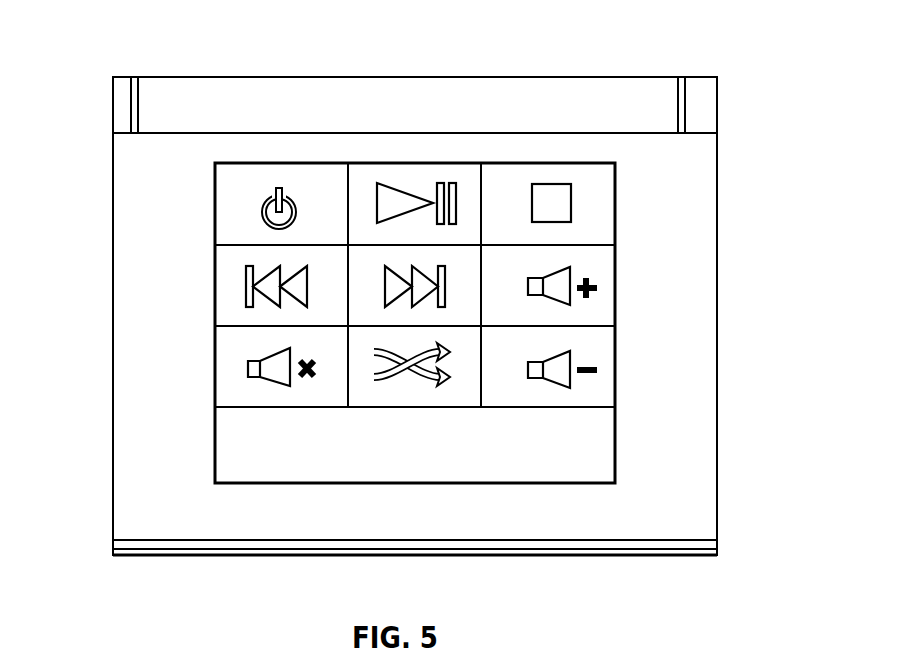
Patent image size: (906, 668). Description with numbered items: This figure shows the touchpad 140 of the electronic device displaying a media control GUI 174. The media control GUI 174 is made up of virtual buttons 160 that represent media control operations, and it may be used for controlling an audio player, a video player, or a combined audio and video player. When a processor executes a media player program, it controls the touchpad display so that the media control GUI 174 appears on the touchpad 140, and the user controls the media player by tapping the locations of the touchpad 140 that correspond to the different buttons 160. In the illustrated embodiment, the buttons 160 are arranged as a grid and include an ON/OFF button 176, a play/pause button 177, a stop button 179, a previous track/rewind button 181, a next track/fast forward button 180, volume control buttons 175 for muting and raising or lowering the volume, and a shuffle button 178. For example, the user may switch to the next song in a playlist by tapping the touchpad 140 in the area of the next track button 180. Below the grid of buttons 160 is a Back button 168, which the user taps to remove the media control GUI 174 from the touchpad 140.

The touchpad 140 is at (232, 168).
The virtual buttons 160 is at (232, 225).
The Back button 168 is at (238, 477).
The media control GUI 174 is at (281, 150).
The volume control buttons 175 is at (232, 384).
The ON/OFF button 176 is at (330, 168).
The play/pause button 177 is at (448, 168).
The shuffle button 178 is at (363, 400).
The stop button 179 is at (600, 204).
The next track/fast forward button 180 is at (465, 312).
The previous track/rewind button 181 is at (232, 299).